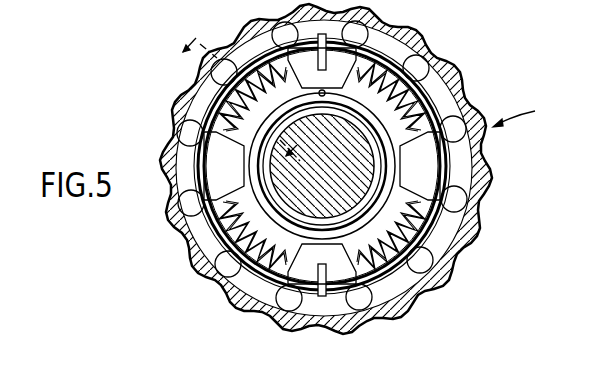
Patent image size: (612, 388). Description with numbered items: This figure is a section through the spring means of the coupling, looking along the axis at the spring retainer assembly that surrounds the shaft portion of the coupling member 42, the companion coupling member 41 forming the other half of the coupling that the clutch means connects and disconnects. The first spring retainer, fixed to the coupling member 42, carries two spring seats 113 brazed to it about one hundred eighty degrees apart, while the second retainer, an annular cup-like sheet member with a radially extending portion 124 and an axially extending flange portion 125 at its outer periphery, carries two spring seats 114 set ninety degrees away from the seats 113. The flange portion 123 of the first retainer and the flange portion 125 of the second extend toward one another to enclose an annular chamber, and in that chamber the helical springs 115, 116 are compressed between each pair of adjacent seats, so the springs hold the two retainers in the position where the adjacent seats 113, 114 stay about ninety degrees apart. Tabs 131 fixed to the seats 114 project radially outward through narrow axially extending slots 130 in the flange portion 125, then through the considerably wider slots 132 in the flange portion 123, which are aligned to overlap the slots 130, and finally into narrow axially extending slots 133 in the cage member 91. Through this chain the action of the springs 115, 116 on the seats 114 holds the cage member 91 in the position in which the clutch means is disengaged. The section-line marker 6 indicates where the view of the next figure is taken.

The coupling member 41 is at (523, 112).
The coupling member 42 is at (346, 187).
The section line 6- 6 is at (236, 104).
The cage member 91 is at (435, 96).
The spring seat 113 is at (423, 167).
The spring seat 114 is at (279, 40).
The helical spring 115 is at (207, 111).
The helical spring 116 is at (448, 58).
The flange portion 123 is at (413, 290).
The radially extending portion 124 is at (456, 247).
The flange portion 125 is at (276, 305).
The slot 130 is at (320, 34).
The tab 131 is at (328, 32).
The slot 132 is at (396, 21).
The slot 133 is at (348, 34).